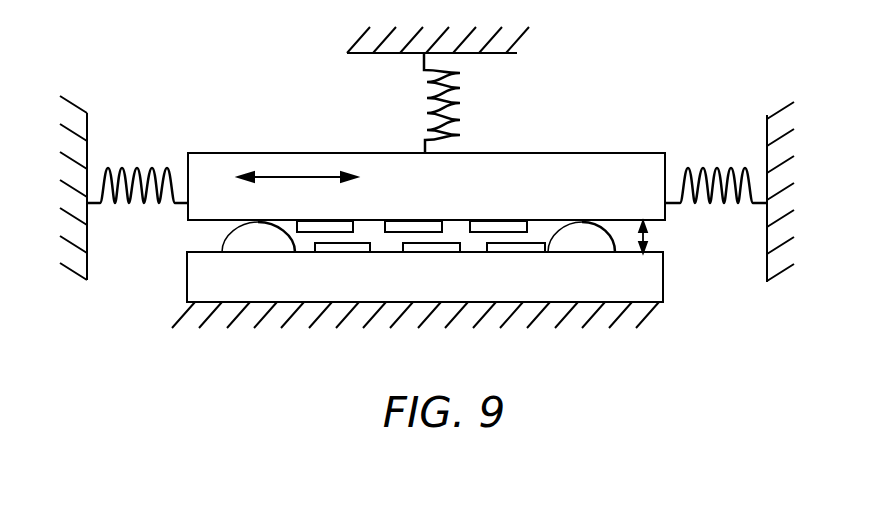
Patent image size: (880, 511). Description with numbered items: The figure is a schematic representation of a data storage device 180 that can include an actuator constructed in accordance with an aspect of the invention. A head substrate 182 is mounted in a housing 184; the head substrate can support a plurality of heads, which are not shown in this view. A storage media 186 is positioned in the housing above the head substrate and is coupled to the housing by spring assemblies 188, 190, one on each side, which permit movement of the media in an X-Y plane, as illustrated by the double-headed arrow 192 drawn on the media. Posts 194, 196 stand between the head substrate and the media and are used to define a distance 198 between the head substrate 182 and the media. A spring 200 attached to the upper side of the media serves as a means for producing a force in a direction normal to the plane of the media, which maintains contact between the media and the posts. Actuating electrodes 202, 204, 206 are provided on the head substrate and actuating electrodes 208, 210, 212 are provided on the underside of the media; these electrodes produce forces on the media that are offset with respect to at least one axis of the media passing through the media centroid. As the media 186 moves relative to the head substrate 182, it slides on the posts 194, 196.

The data storage device 180 is at (605, 88).
The head substrate 182 is at (652, 286).
The housing 184 is at (457, 328).
The storage media 186 is at (624, 163).
The spring assembly 188 is at (138, 168).
The spring assembly 190 is at (705, 170).
The arrow 192 is at (290, 175).
The post 194 is at (240, 238).
The post 196 is at (588, 228).
The distance 198 is at (650, 239).
The spring 200 is at (461, 103).
The actuating electrode 202 is at (342, 249).
The actuating electrode 204 is at (430, 247).
The actuating electrode 206 is at (523, 247).
The actuating electrode 208 is at (323, 224).
The actuating electrode 210 is at (404, 225).
The actuating electrode 212 is at (498, 226).